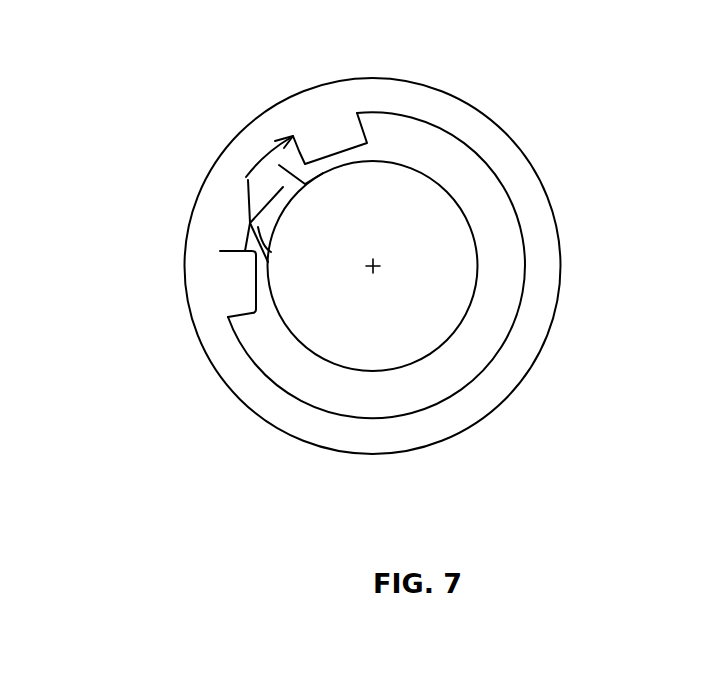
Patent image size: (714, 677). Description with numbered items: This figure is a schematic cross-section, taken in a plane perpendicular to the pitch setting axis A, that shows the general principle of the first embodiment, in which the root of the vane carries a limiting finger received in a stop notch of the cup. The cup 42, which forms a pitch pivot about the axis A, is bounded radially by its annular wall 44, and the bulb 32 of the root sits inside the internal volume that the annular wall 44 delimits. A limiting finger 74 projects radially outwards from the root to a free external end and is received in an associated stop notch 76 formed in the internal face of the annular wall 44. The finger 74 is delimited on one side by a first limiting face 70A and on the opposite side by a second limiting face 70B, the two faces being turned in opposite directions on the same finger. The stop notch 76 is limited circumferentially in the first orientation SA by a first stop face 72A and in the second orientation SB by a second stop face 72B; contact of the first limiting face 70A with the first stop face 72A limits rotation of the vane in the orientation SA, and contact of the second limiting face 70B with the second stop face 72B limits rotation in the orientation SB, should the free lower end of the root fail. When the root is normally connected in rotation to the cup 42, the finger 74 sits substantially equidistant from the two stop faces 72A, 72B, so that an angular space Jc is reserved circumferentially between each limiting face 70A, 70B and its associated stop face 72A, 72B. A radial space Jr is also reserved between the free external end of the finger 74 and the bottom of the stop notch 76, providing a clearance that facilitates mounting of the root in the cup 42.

The bulb 32 is at (432, 203).
The cup 42 is at (523, 383).
The annular wall 44 is at (227, 377).
The first radial limiting face 70A is at (262, 232).
The second radial limiting face 70B is at (348, 168).
The first radial stop face 72A is at (217, 251).
The second radial stop face 72B is at (280, 137).
The limiting finger 74 is at (266, 191).
The stop notch 76 is at (232, 244).
The pitch setting axis A is at (380, 263).
The angular space Jc is at (233, 244).
The radial space Jr is at (240, 167).
The first orientation SA is at (520, 443).
The second orientation SB is at (323, 490).